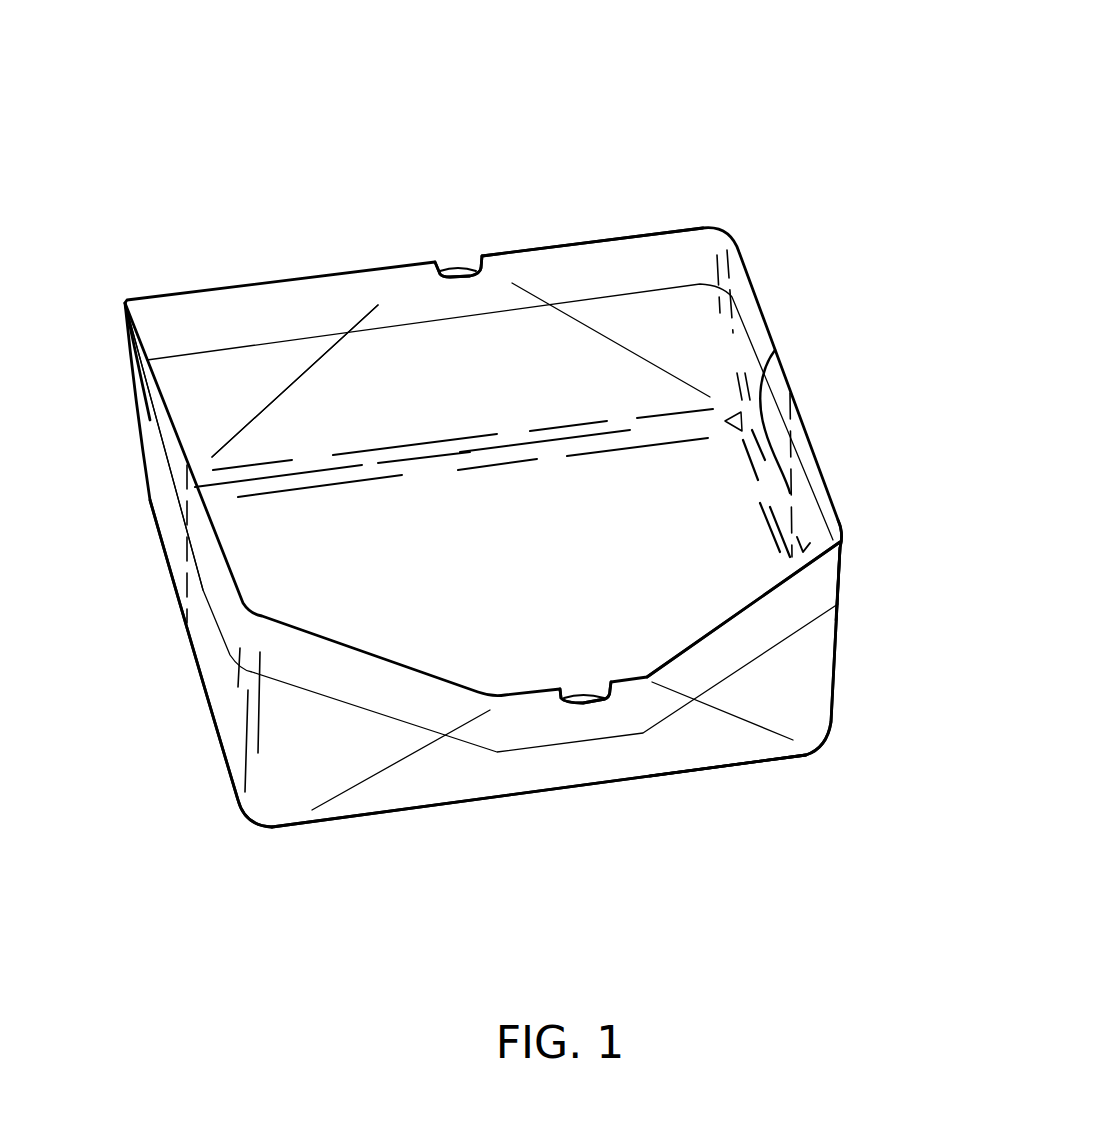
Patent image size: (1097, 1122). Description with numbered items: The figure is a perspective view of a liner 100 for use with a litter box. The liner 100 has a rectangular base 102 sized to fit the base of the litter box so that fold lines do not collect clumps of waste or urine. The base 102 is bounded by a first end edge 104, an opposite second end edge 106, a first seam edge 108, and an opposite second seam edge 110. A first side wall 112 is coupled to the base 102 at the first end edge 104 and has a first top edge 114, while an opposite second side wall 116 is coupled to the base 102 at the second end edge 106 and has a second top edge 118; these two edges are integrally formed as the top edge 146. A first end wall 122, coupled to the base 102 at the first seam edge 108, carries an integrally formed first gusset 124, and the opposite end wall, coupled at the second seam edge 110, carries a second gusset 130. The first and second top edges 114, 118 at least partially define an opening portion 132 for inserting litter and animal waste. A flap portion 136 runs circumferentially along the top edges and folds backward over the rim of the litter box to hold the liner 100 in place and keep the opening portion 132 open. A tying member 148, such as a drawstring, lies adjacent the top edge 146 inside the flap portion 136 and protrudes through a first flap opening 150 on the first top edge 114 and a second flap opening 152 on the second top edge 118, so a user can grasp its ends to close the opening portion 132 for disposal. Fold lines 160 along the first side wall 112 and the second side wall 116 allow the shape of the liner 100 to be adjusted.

The liner 100 is at (797, 131).
The base 102 is at (538, 502).
The first end edge 104 is at (327, 467).
The second end edge 106 is at (528, 793).
The first seam edge 108 is at (193, 652).
The second seam edge 110 is at (843, 542).
The first side wall 112 is at (347, 358).
The first top edge 114 is at (622, 253).
The second side wall 116 is at (723, 743).
The second top edge 118 is at (760, 600).
The first end wall 122 is at (167, 518).
The first gusset 124 is at (183, 578).
The second gusset 130 is at (775, 350).
The opening portion 132 is at (178, 283).
The flap portion 136 is at (443, 703).
The top edge 146 is at (150, 387).
The tying member 148 is at (453, 265).
The first flap opening 150 is at (437, 262).
The second flap opening 152 is at (610, 694).
The fold line 160 is at (633, 350).